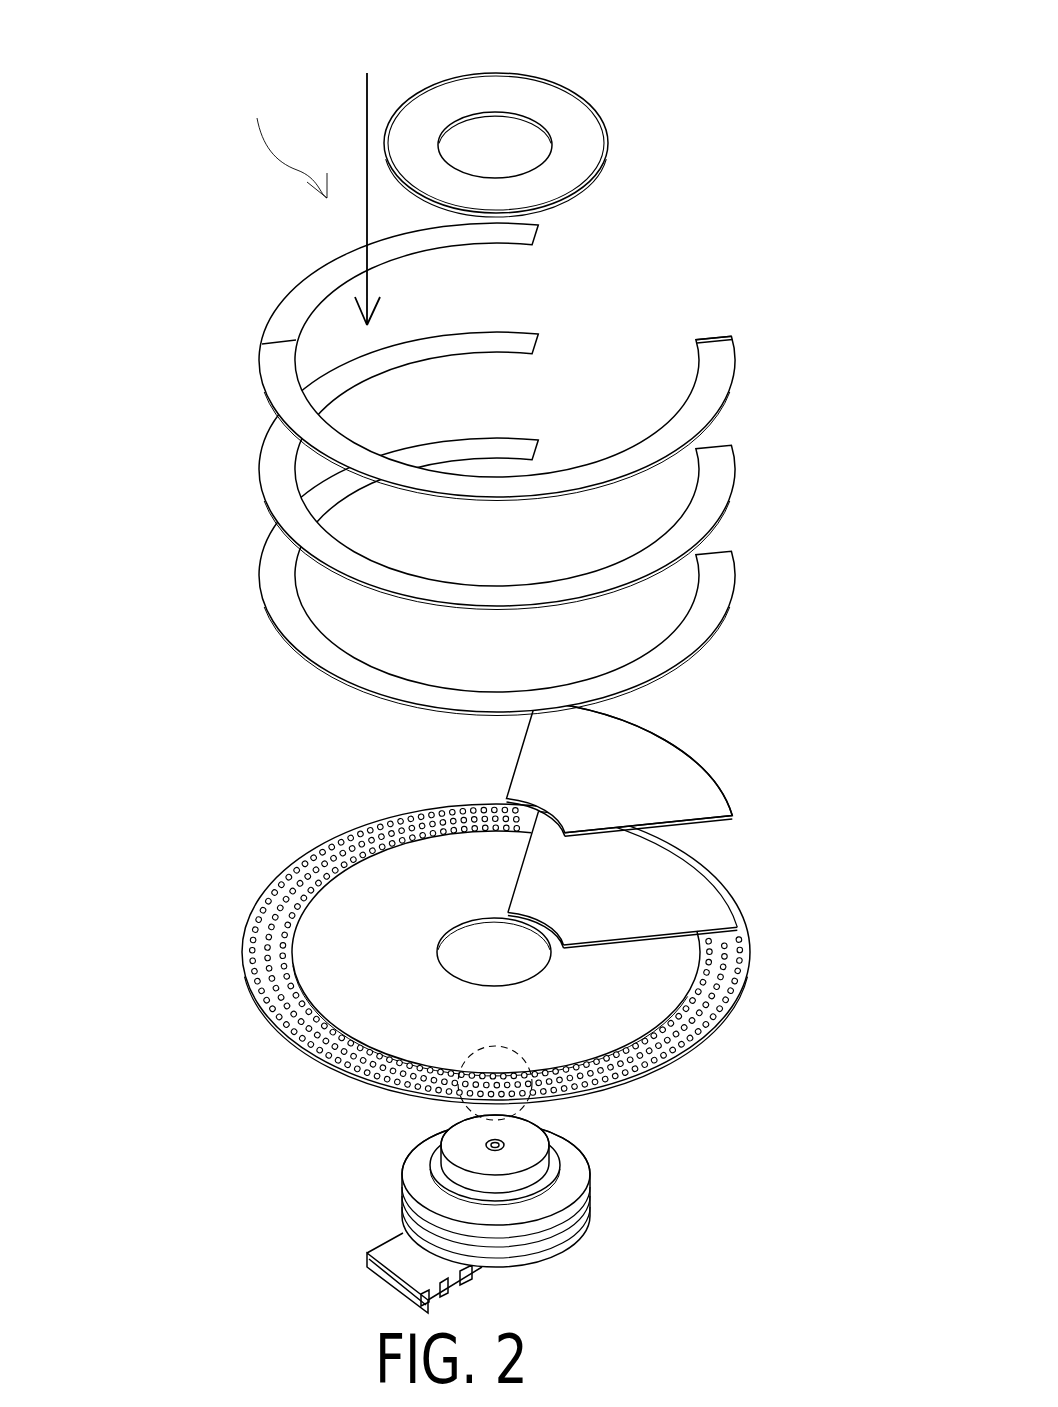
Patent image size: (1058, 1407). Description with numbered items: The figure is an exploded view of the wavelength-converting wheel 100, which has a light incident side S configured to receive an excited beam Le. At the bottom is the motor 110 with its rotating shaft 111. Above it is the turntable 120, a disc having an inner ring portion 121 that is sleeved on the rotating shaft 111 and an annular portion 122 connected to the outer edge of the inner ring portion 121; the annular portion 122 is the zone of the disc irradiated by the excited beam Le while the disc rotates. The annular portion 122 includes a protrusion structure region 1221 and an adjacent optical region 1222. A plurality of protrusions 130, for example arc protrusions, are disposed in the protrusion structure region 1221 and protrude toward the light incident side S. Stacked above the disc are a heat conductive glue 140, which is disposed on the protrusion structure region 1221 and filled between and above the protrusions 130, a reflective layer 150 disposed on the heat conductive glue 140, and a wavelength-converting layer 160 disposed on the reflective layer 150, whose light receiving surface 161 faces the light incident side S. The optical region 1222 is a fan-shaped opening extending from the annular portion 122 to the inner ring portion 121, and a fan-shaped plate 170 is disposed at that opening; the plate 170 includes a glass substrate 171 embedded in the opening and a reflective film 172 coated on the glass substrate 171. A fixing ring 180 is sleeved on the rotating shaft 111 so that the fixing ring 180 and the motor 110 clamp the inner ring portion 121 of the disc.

The wavelength-converting wheel 100 is at (236, 47).
The motor 110 is at (558, 1230).
The rotating shaft 111 is at (532, 1143).
The turntable 120 is at (126, 782).
The inner ring portion 121 is at (382, 887).
The annular portion 122 is at (253, 883).
The protrusion structure region 1221 is at (745, 972).
The optical region 1222 is at (662, 882).
The protrusions 130 is at (243, 952).
The heat conductive glue 140 is at (743, 570).
The reflective layer 150 is at (743, 467).
The wavelength-converting layer 160 is at (727, 384).
The light receiving surface 161 is at (722, 345).
The plate 170 is at (703, 762).
The glass substrate 171 is at (702, 823).
The reflective film 172 is at (640, 748).
The fixing ring 180 is at (558, 112).
The excited beam Le is at (367, 98).
The light incident side S is at (286, 134).